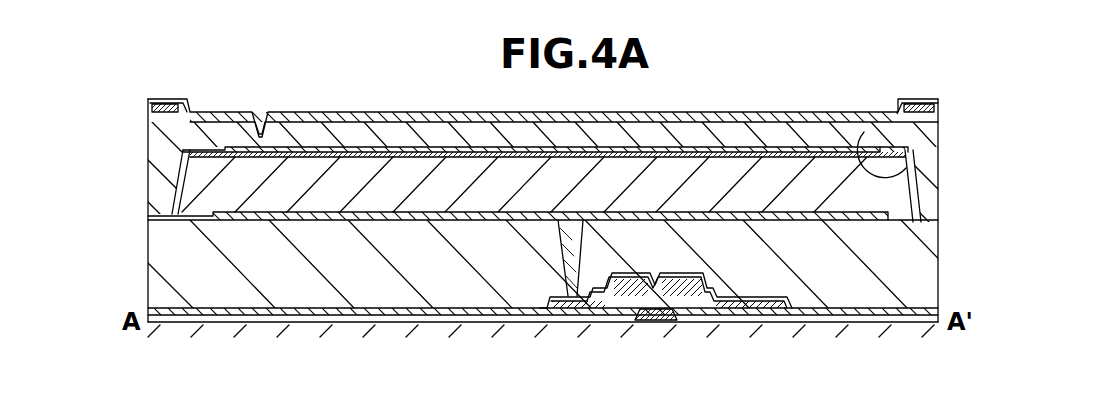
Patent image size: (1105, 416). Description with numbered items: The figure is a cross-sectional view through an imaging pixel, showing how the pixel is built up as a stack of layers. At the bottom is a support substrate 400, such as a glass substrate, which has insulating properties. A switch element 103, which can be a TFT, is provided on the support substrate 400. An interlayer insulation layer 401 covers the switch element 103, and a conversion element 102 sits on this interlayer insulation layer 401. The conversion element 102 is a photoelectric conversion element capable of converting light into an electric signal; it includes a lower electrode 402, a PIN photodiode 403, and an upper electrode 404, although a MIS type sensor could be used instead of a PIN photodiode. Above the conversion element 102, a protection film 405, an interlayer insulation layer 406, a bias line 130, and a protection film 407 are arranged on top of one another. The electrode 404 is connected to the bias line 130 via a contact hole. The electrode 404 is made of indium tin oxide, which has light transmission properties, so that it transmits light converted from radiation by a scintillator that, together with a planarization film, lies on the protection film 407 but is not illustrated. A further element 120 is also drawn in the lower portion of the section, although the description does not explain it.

The support substrate 400 is at (903, 332).
The interlayer insulation layer 401 is at (160, 242).
The electrode 402 is at (877, 222).
The PIN photodiode 403 is at (897, 196).
The electrode 404 is at (880, 175).
The protection film 405 is at (862, 142).
The interlayer insulation layer 406 is at (160, 155).
The protection film 407 is at (770, 112).
The bias line 130 is at (927, 112).
The switch element 103 is at (790, 343).
The signal line 120 is at (782, 322).
The conversion element 102 is at (1013, 133).